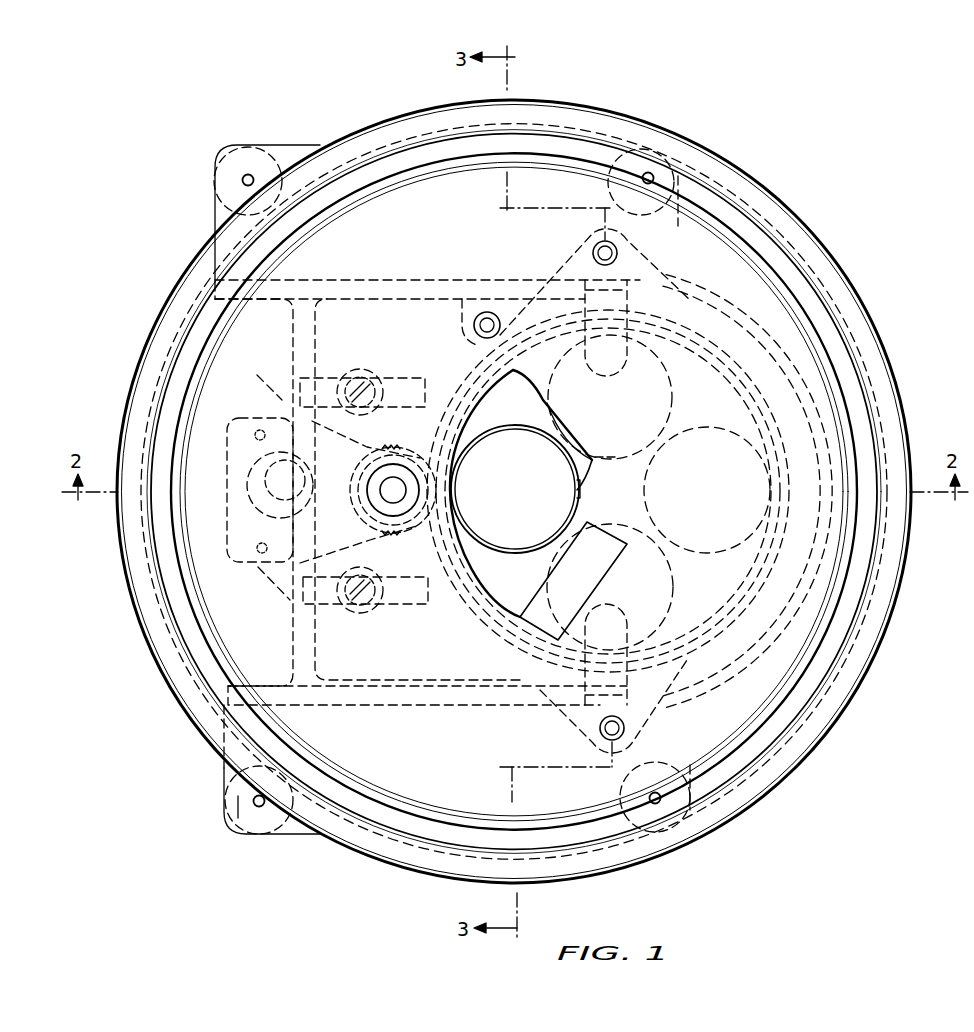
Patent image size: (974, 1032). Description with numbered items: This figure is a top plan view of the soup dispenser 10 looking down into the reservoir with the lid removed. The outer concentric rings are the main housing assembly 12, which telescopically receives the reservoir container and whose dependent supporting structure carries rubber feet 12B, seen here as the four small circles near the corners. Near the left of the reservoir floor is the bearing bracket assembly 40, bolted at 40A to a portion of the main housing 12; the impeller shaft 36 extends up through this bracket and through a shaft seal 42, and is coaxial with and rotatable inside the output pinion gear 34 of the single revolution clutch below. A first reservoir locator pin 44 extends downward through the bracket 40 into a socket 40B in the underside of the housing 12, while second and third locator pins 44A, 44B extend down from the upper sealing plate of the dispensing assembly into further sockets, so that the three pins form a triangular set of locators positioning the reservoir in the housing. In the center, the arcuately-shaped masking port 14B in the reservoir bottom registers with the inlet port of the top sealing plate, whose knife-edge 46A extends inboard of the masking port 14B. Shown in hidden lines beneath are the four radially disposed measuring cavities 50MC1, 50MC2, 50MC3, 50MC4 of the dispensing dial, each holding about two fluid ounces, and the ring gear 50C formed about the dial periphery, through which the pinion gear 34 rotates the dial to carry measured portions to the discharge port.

The soup dispenser 10 is at (910, 698).
The main housing assembly 12 is at (142, 599).
The rubber feet 12B is at (232, 152).
The masking port 14B is at (505, 603).
The output pinion gear 34 is at (408, 535).
The impeller shaft 36 is at (407, 480).
The bearing bracket assembly 40 is at (262, 526).
The bolts 40A is at (257, 432).
The socket 40B is at (305, 448).
The shaft seal 42 is at (368, 488).
The first reservoir locator pin 44 is at (256, 436).
The second locator pin 44A is at (599, 728).
The third locator pin 44B is at (616, 243).
The knife-edge 46A is at (597, 581).
The ring gear 50C is at (442, 383).
The measuring cavity 50MC1 is at (549, 482).
The measuring cavity 50MC2 is at (610, 397).
The measuring cavity 50MC3 is at (707, 490).
The measuring cavity 50MC4 is at (648, 587).